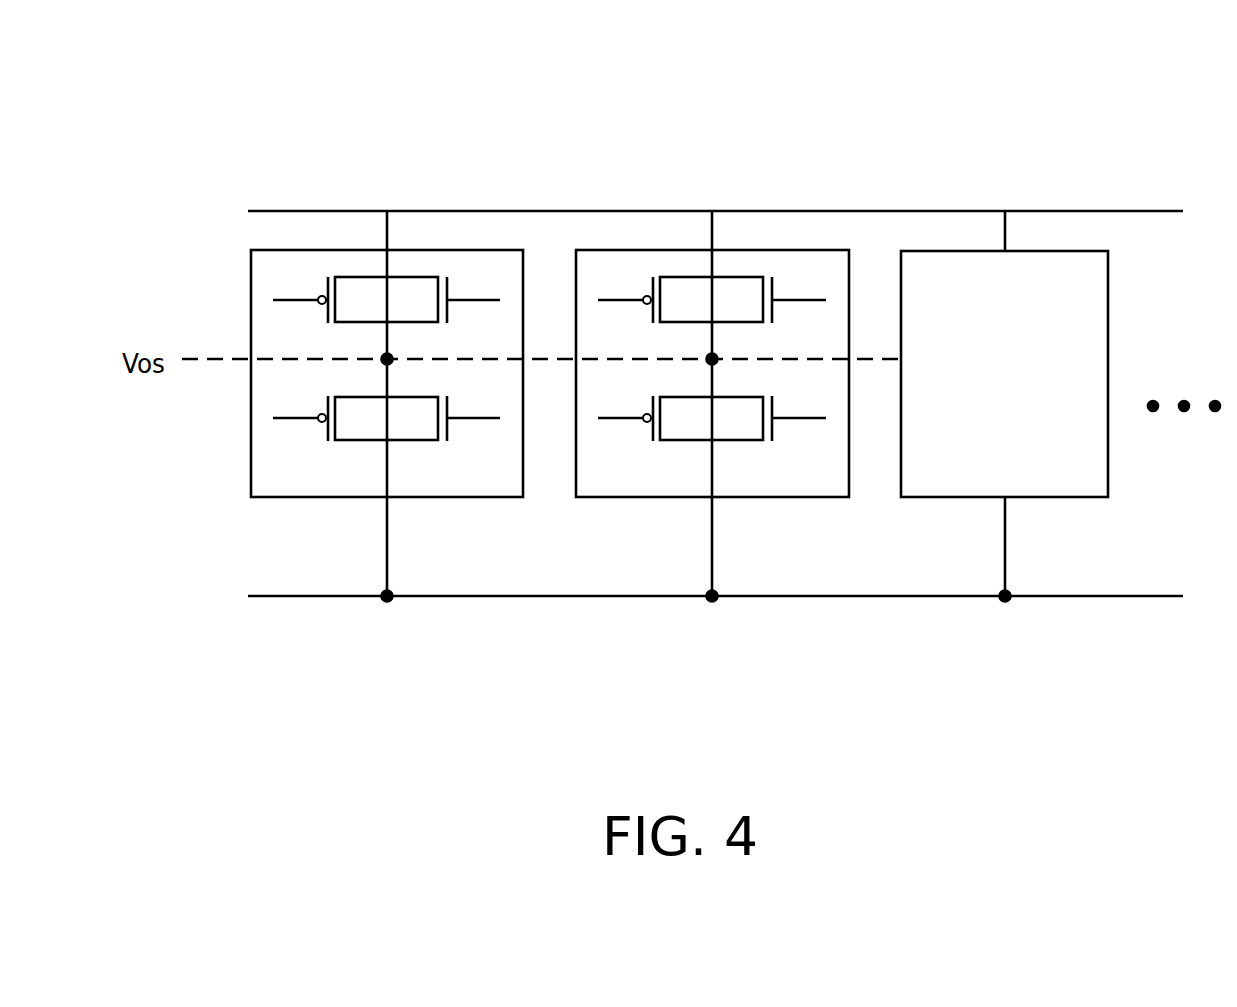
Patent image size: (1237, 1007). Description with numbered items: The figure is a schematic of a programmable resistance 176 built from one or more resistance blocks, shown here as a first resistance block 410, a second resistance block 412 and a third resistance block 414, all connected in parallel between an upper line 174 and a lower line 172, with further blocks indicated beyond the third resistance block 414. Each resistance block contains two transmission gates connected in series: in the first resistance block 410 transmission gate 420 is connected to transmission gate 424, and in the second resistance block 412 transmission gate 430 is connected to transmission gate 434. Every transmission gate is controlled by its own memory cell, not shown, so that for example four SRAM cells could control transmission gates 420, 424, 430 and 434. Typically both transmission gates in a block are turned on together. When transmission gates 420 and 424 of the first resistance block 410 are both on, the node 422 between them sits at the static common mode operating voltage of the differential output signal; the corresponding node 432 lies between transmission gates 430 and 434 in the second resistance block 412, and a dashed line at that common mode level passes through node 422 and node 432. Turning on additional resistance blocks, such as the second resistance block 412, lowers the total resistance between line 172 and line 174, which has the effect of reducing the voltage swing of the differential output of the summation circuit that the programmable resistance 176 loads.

The line 172 is at (435, 599).
The line 174 is at (439, 209).
The programmable resistance 176 is at (888, 138).
The resistance block R1 410 is at (456, 249).
The resistance block R2 412 is at (781, 249).
The resistance block R3 414 is at (1060, 250).
The transmission gate 420 is at (411, 312).
The node 422 is at (390, 356).
The transmission gate 424 is at (409, 432).
The transmission gate 430 is at (736, 312).
The node 432 is at (715, 356).
The transmission gate 434 is at (734, 432).